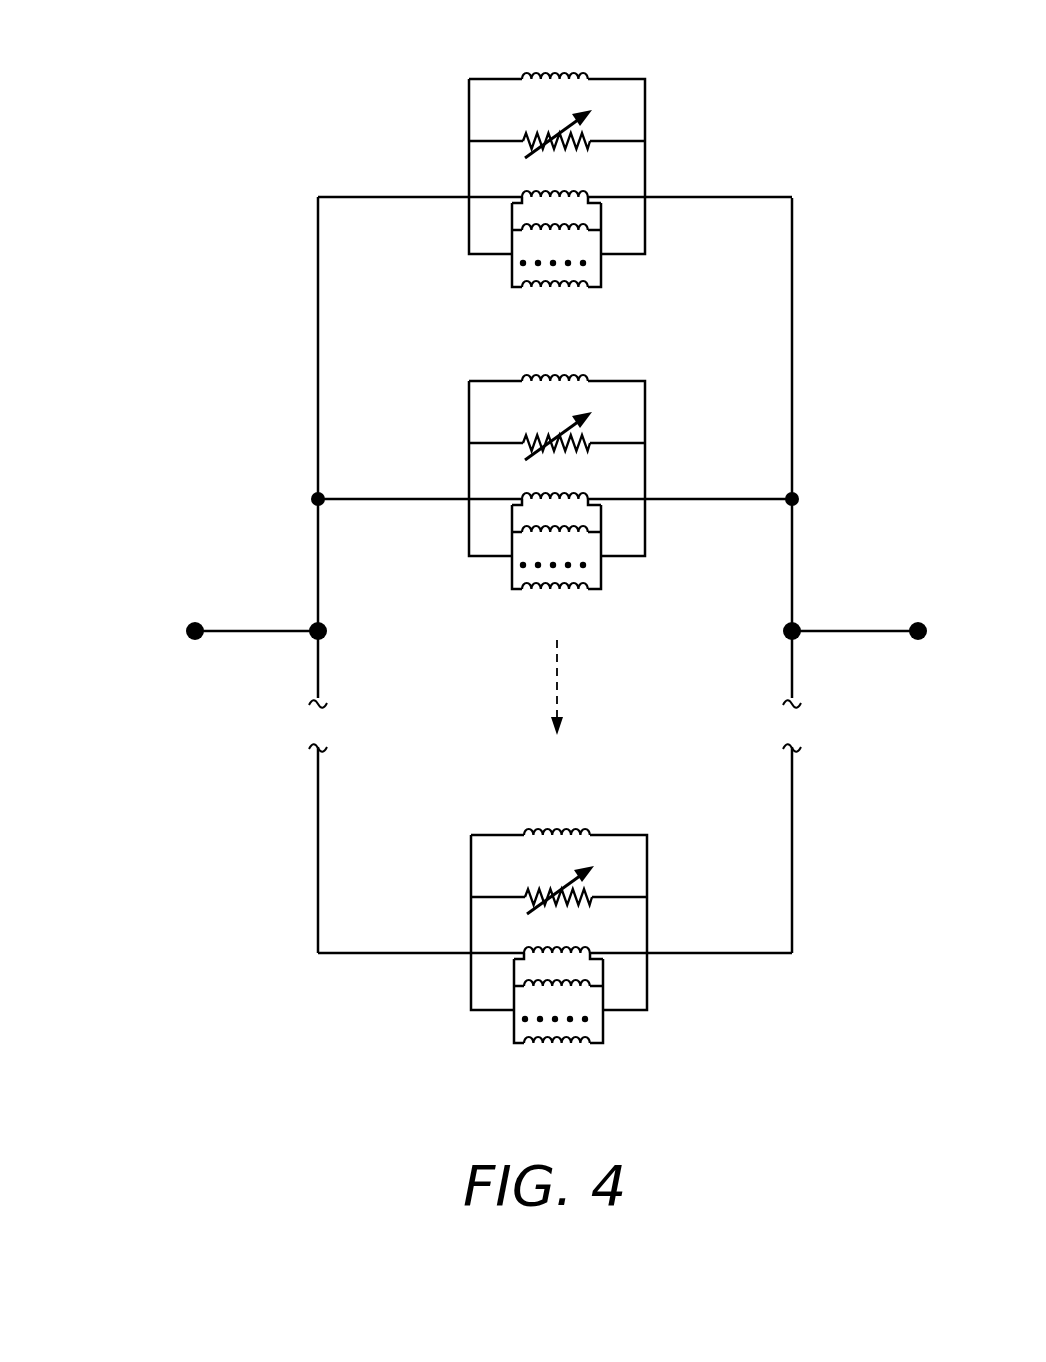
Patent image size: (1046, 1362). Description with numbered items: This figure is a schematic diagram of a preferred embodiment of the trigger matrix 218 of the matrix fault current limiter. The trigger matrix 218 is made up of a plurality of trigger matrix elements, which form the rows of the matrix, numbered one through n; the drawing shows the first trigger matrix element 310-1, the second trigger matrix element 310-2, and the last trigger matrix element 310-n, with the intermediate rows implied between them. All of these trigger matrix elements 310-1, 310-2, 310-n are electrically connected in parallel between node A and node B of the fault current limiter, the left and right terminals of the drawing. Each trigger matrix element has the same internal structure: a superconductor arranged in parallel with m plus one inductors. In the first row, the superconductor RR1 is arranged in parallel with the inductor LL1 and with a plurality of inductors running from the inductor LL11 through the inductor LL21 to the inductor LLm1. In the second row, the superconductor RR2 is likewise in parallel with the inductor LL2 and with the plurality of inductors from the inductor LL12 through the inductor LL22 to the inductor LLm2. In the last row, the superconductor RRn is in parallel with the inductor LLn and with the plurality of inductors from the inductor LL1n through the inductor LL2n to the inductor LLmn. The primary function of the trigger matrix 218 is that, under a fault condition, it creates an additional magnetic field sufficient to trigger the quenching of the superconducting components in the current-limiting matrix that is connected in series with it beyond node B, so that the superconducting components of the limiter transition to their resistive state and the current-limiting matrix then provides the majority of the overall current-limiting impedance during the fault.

The trigger matrix 218 is at (184, 112).
The trigger matrix element 310-1 is at (438, 154).
The trigger matrix element 310-2 is at (450, 446).
The trigger matrix element 310-n is at (450, 884).
The inductor LL1 is at (548, 69).
The inductor LL2 is at (558, 350).
The inductor LLn is at (560, 803).
The superconductor RR1 is at (585, 139).
The superconductor RR2 is at (613, 407).
The superconductor RRn is at (615, 858).
The inductor LL11 is at (592, 195).
The inductor LL12 is at (617, 459).
The inductor LL1n is at (619, 908).
The inductor LL21 is at (530, 233).
The inductor LL22 is at (514, 565).
The inductor LL2n is at (516, 1017).
The inductor LLm1 is at (524, 288).
The inductor LLm2 is at (526, 622).
The inductor LLmn is at (527, 1077).
The node A is at (254, 608).
The node B is at (855, 608).